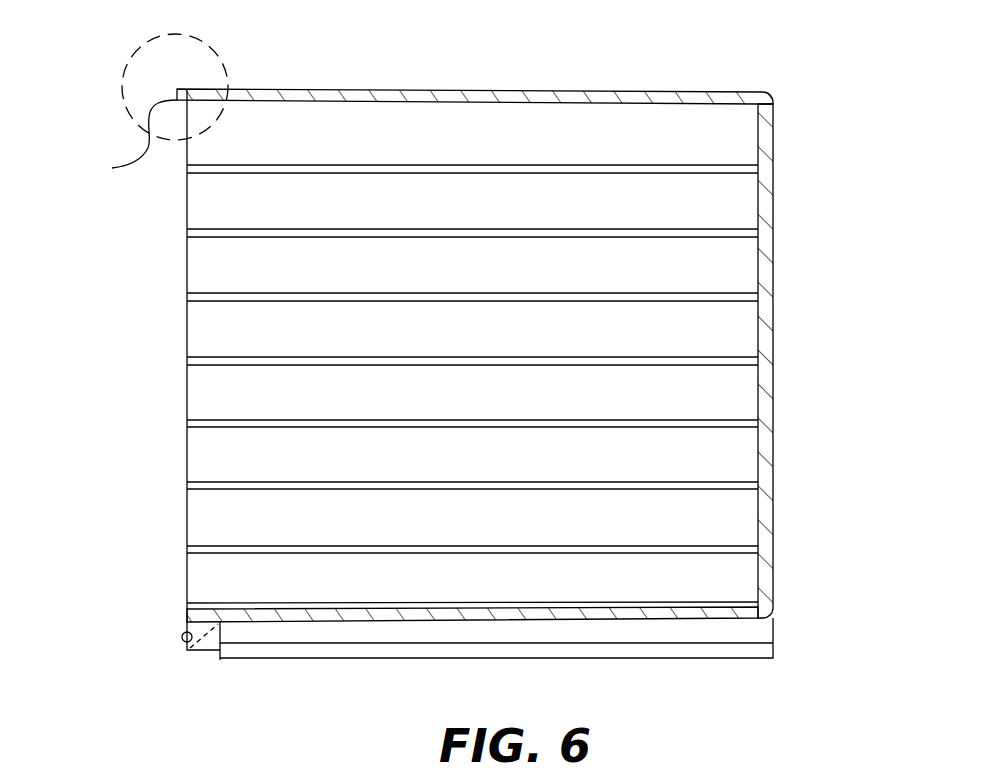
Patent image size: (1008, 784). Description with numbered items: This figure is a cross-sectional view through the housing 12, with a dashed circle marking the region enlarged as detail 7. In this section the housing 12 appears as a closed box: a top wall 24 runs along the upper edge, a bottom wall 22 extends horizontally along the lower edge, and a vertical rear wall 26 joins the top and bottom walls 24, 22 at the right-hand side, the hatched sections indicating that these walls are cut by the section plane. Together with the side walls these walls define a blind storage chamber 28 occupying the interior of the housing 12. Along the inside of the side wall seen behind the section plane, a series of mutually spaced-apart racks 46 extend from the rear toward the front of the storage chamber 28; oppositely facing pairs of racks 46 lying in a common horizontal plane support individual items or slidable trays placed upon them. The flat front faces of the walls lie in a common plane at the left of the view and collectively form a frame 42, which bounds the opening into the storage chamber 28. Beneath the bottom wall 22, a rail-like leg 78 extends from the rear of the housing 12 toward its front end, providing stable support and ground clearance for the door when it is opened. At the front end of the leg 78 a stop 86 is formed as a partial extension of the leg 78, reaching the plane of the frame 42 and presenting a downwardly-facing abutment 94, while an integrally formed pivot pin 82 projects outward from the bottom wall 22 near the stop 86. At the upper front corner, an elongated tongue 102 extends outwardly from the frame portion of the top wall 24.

The housing 12 is at (788, 80).
The top wall 24 is at (474, 90).
The bottom wall 22 is at (470, 597).
The rear wall 26 is at (772, 355).
The frame 42 is at (187, 412).
The racks 46 is at (620, 172).
The storage chamber 28 is at (455, 338).
The leg 78 is at (633, 632).
The stop 86 is at (205, 652).
The downwardly-facing abutment 94 is at (190, 652).
The pivot pin 82 is at (182, 638).
The tongue 102 is at (117, 142).
The detail circle (FIG. 7) 7 is at (125, 63).